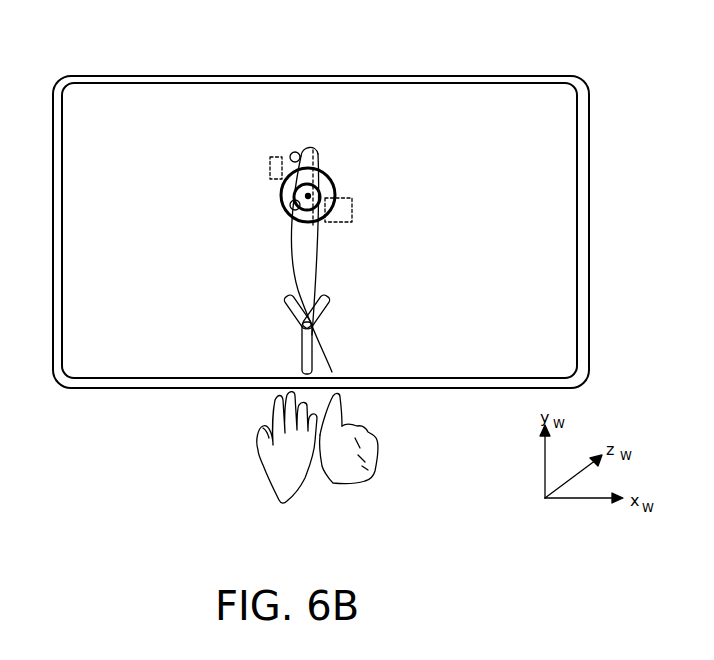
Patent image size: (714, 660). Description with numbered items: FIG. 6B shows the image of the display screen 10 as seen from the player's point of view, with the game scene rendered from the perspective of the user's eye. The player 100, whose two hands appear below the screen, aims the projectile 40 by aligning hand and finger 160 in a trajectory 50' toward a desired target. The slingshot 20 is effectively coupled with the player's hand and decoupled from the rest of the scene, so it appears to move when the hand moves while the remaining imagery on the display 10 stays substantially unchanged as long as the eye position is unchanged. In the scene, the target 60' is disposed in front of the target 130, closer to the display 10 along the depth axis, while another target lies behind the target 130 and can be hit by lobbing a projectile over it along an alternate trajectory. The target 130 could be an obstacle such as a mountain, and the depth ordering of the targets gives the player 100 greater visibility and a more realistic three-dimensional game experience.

The display screen 10 is at (147, 96).
The slingshot 20 is at (340, 302).
The projectile 40 is at (282, 200).
The trajectory 50' is at (284, 263).
The target 60' is at (359, 212).
The player 100 is at (334, 464).
The target 130 is at (332, 180).
The hand and finger 160 is at (340, 398).